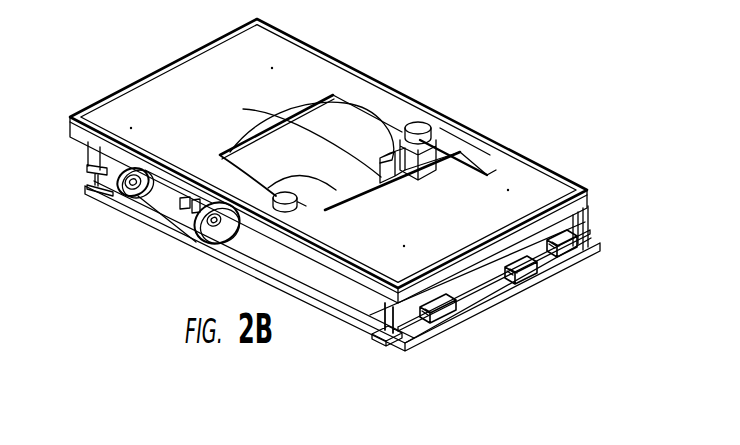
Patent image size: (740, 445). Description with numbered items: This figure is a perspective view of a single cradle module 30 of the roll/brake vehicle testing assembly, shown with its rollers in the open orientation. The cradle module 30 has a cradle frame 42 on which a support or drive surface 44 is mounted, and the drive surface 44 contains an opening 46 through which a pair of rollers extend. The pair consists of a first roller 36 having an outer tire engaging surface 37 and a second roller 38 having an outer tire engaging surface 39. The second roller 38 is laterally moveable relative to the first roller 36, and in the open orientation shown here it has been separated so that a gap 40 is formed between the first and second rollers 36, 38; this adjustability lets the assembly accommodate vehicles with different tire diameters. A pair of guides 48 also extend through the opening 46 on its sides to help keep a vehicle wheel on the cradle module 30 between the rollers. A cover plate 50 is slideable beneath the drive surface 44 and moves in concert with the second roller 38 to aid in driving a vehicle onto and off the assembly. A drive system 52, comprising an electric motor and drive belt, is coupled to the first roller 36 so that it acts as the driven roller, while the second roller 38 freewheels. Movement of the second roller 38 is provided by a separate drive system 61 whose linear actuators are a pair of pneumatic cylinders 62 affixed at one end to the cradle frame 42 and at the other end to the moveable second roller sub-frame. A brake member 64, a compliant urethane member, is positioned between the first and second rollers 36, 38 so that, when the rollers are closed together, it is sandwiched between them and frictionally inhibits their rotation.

The cradle module 30 is at (163, 63).
The first roller 36 is at (334, 121).
The outer tire engaging surface 37 is at (253, 154).
The second roller 38 is at (478, 193).
The outer tire engaging surface 39 is at (393, 197).
The gap 40 is at (217, 237).
The cradle frame 42 is at (519, 315).
The drive surface 44 is at (287, 50).
The opening 46 is at (492, 192).
The guides 48 is at (420, 123).
The cover plate 50 is at (377, 227).
The drive system 52 is at (146, 205).
The drive system 61 is at (532, 285).
The pneumatic cylinders 62 is at (443, 323).
The brake member 64 is at (301, 137).